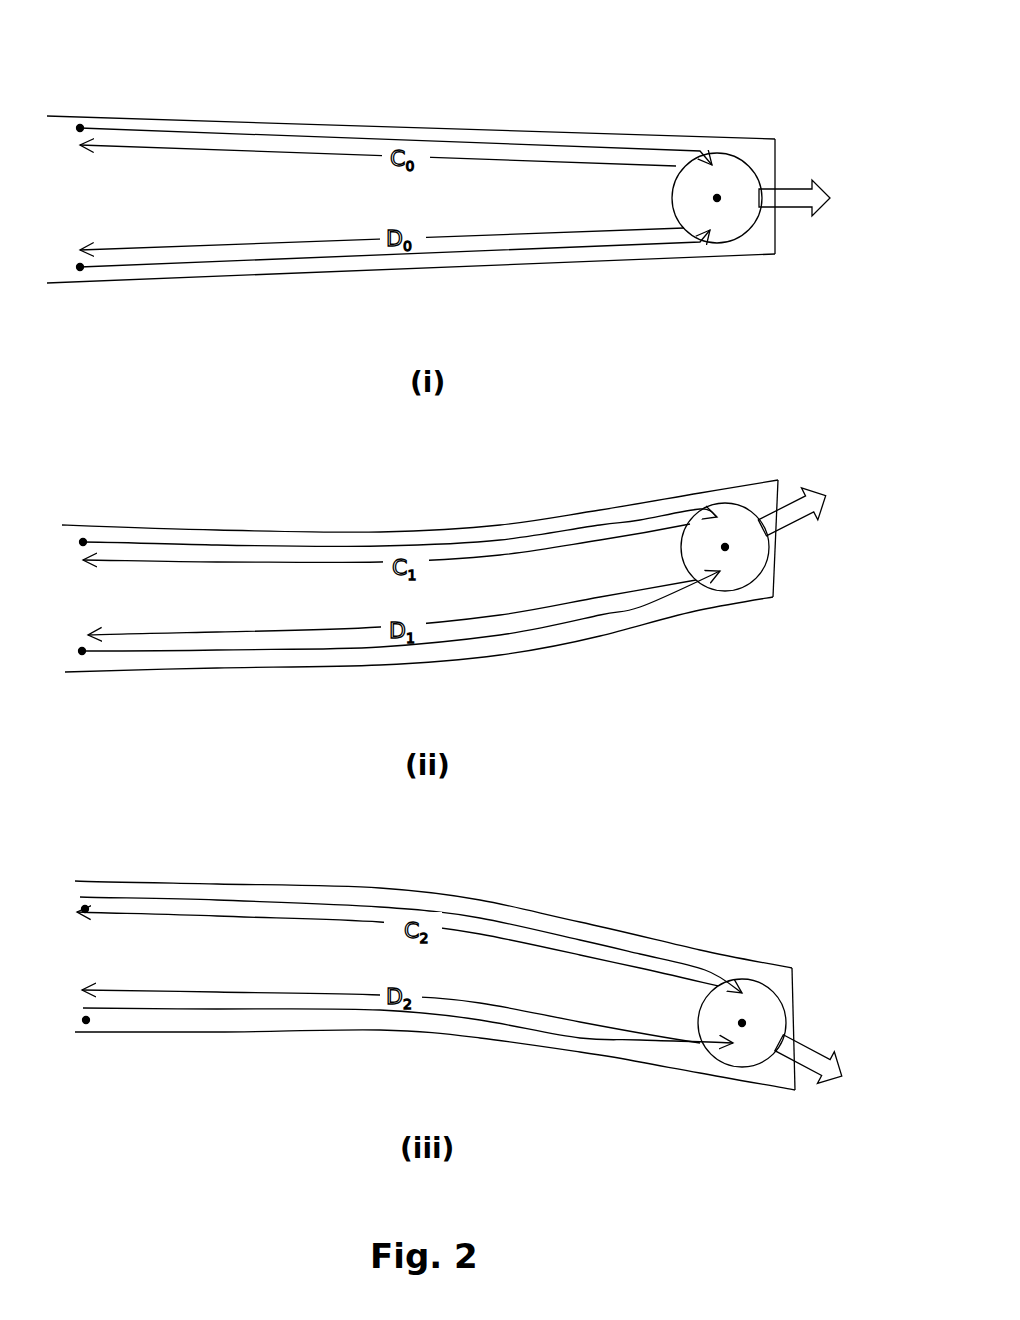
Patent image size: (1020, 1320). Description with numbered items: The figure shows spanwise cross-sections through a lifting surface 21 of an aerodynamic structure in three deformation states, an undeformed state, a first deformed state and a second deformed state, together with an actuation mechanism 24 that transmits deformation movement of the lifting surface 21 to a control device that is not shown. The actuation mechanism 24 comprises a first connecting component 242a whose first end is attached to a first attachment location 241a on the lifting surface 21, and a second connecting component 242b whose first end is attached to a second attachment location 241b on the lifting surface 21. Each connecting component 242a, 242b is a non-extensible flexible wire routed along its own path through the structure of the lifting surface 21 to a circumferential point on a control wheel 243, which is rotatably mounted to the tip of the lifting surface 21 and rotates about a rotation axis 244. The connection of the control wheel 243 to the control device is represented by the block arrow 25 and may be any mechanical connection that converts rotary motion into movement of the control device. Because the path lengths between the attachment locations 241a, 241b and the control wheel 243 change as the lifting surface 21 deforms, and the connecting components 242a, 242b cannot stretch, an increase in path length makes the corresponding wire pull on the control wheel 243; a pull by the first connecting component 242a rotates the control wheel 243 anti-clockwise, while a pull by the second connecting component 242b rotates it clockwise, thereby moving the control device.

The lifting surface 21 is at (237, 205).
The actuation mechanism 24 is at (582, 117).
The first attachment location 241a is at (80, 126).
The second attachment location 241b is at (79, 270).
The first connecting component 242a is at (350, 137).
The second connecting component 242b is at (308, 258).
The control wheel 243 is at (733, 220).
The rotation axis 244 is at (720, 195).
The block arrow 25 is at (790, 195).